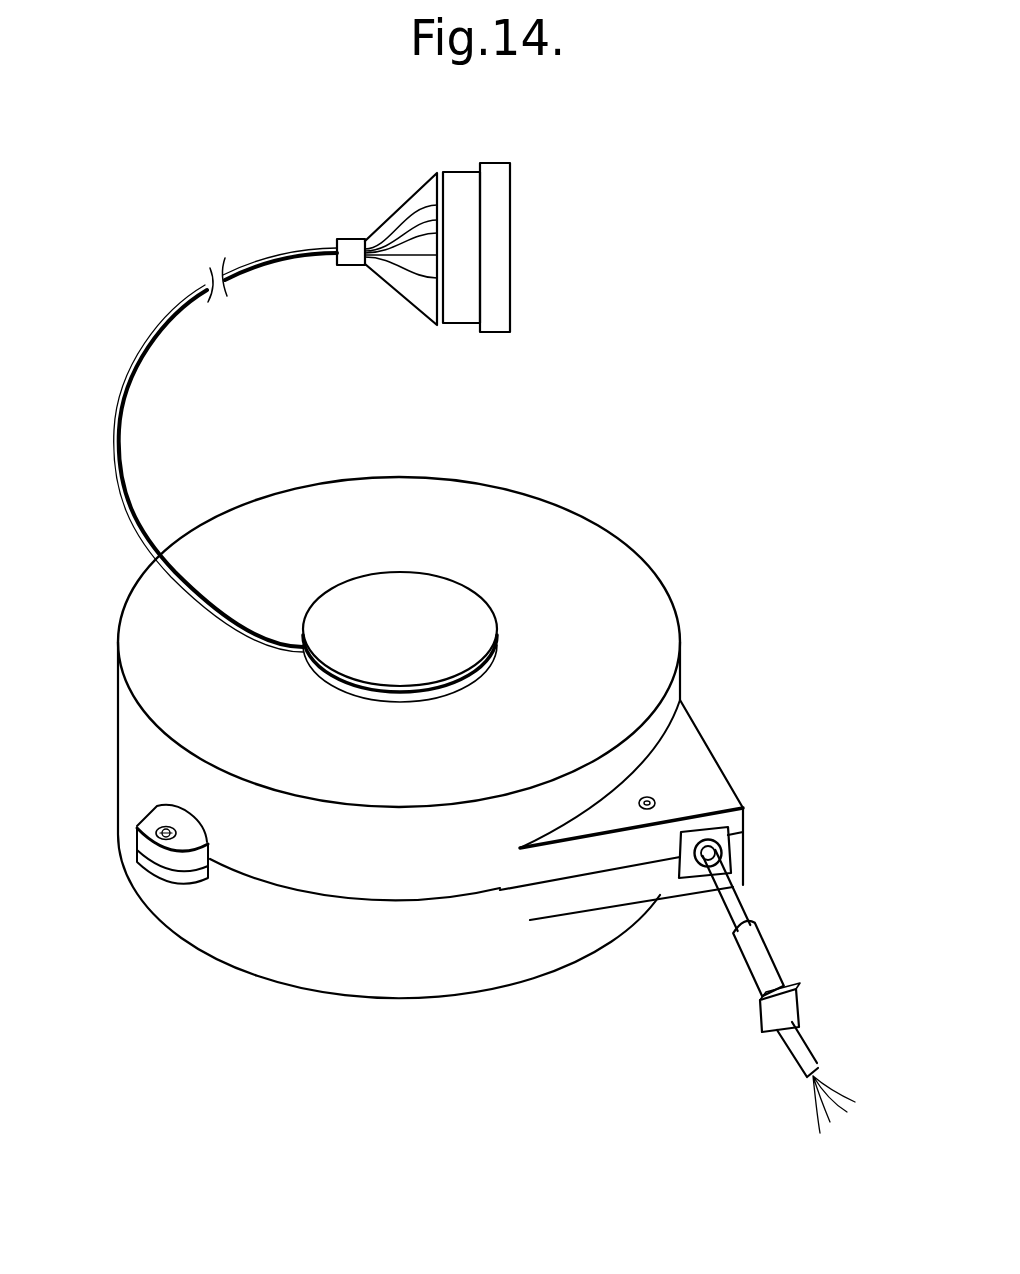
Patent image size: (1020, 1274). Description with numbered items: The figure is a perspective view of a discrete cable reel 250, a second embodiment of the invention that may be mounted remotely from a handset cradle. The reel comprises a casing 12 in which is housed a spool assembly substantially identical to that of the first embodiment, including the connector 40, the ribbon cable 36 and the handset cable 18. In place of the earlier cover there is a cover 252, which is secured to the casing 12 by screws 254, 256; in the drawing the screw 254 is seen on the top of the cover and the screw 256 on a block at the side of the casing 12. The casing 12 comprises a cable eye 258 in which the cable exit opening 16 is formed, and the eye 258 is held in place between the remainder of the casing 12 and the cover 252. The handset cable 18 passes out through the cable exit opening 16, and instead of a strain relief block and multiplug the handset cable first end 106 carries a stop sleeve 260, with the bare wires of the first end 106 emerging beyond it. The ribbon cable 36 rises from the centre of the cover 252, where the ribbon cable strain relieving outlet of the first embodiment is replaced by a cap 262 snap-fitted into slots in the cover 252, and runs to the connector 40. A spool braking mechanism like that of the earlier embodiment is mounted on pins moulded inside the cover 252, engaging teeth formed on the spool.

The casing 12 is at (234, 942).
The cable exit opening 16 is at (721, 855).
The handset cable 18 is at (745, 903).
The ribbon cable 36 is at (146, 326).
The connector 40 is at (455, 184).
The handset cable first end 106 is at (810, 1047).
The discrete cable reel 250 is at (602, 497).
The cover 252 is at (631, 571).
The screw 254 is at (651, 797).
The screw 256 is at (138, 822).
The cable eye 258 is at (723, 838).
The stop sleeve 260 is at (777, 970).
The cap 262 is at (436, 644).